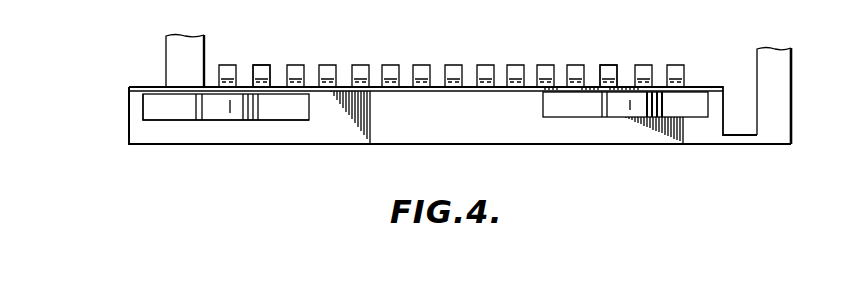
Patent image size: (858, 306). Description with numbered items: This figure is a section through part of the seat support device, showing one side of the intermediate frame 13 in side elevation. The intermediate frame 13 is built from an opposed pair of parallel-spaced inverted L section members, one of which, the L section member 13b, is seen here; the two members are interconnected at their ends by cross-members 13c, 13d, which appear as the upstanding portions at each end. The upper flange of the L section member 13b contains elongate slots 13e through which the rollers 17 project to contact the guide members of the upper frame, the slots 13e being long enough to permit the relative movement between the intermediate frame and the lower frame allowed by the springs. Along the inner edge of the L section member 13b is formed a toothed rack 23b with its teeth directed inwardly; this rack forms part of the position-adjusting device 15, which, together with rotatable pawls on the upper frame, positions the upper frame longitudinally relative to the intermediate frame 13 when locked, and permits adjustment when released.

The intermediate frame 13 is at (483, 112).
The inverted L section member 13b is at (322, 130).
The cross-member 13c is at (175, 60).
The cross-member 13d is at (782, 78).
The elongate slot 13e is at (155, 105).
The position-adjusting device 15 is at (437, 67).
The roller 17 is at (215, 110).
The toothed rack 23b is at (262, 72).